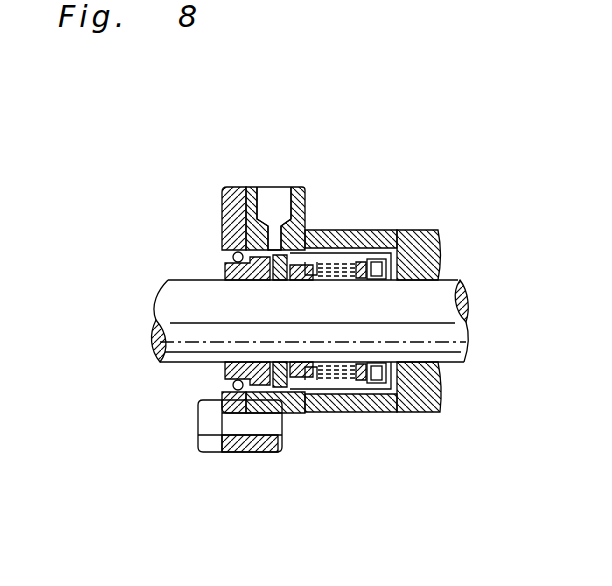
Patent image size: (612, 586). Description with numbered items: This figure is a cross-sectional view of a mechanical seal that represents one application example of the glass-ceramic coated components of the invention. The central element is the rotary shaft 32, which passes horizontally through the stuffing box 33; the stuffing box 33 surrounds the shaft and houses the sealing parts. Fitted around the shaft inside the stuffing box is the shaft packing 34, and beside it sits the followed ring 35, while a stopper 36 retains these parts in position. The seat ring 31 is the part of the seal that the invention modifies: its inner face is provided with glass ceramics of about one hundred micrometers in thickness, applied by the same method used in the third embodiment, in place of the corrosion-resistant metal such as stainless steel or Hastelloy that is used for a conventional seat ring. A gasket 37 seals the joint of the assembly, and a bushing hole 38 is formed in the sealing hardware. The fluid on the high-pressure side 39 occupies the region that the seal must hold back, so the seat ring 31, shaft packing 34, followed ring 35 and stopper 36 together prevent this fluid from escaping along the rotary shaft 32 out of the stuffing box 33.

The seat ring 31 is at (264, 388).
The rotary shaft 32 is at (192, 292).
The stuffing box 33 is at (343, 229).
The shaft packing 34 is at (305, 234).
The followed ring 35 is at (307, 366).
The stopper 36 is at (378, 368).
The gasket 37 is at (247, 408).
The bushing hole 38 is at (264, 187).
The fluid on the high-pressure side 39 is at (398, 250).